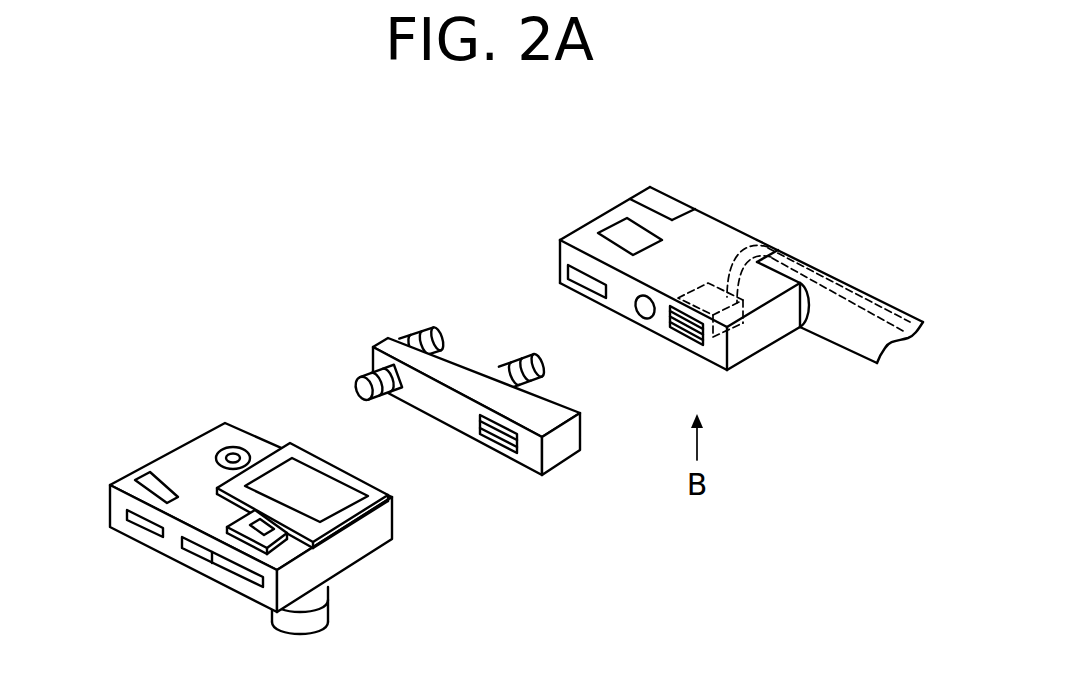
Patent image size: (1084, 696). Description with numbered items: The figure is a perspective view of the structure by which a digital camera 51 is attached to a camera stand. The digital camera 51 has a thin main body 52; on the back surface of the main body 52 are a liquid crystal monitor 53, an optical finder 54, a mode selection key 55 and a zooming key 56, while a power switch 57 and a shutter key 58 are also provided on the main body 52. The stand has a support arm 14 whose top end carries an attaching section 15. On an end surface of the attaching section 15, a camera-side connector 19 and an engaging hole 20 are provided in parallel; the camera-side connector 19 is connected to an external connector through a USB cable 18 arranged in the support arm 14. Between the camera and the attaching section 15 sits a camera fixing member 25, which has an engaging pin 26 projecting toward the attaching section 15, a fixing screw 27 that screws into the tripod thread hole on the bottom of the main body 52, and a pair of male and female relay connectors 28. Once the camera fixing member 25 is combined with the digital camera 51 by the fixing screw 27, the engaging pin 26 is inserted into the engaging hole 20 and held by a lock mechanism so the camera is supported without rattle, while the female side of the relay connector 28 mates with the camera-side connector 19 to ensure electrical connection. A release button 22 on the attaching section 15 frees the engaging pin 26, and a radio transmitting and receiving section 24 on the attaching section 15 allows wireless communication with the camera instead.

The support arm 14 is at (858, 287).
The attaching section 15 is at (685, 273).
The USB cable 18 is at (738, 247).
The camera-side connector 19 is at (690, 338).
The engaging hole 20 is at (642, 312).
The release button 22 is at (617, 230).
The radio transmitting and receiving section 24 is at (568, 274).
The camera fixing member 25 is at (500, 392).
The engaging pin 26 is at (533, 356).
The fixing screw 27 is at (420, 330).
The relay connectors 28 is at (506, 451).
The digital camera 51 is at (228, 458).
The main body 52 is at (193, 455).
The liquid crystal monitor 53 is at (322, 480).
The optical finder 54 is at (257, 536).
The mode selection key 55 is at (236, 450).
The zooming key 56 is at (128, 478).
The power switch 57 is at (192, 553).
The shutter key 58 is at (143, 530).